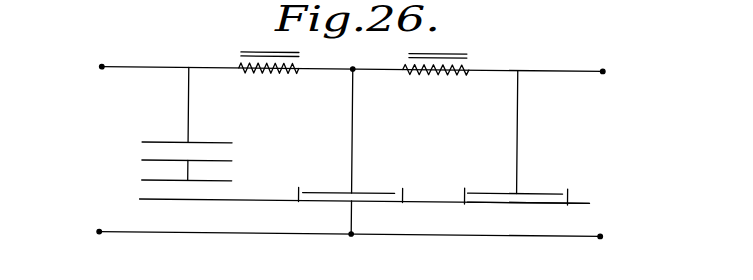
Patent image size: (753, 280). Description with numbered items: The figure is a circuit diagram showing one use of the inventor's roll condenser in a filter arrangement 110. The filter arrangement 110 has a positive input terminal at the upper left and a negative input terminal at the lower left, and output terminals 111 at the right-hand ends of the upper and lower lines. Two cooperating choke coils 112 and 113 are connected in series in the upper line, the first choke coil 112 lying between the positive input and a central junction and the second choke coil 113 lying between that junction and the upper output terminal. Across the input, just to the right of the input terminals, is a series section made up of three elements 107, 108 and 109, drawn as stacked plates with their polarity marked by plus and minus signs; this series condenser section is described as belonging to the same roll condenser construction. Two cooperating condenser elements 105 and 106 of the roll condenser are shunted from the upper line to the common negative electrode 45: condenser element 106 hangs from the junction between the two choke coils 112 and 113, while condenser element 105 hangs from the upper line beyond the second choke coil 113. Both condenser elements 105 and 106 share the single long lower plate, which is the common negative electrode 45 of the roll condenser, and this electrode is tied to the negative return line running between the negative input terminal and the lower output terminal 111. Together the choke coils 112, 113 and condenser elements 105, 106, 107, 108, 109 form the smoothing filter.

The filter arrangement 110 is at (114, 84).
The output terminals 111 is at (603, 71).
The choke coil 112 is at (268, 75).
The choke coil 113 is at (435, 77).
The series section element 108 is at (140, 161).
The series section element 109 is at (212, 143).
The series section element 107 is at (218, 181).
The condenser element 106 is at (351, 183).
The condenser element 105 is at (515, 182).
The common negative electrode 45 is at (492, 203).